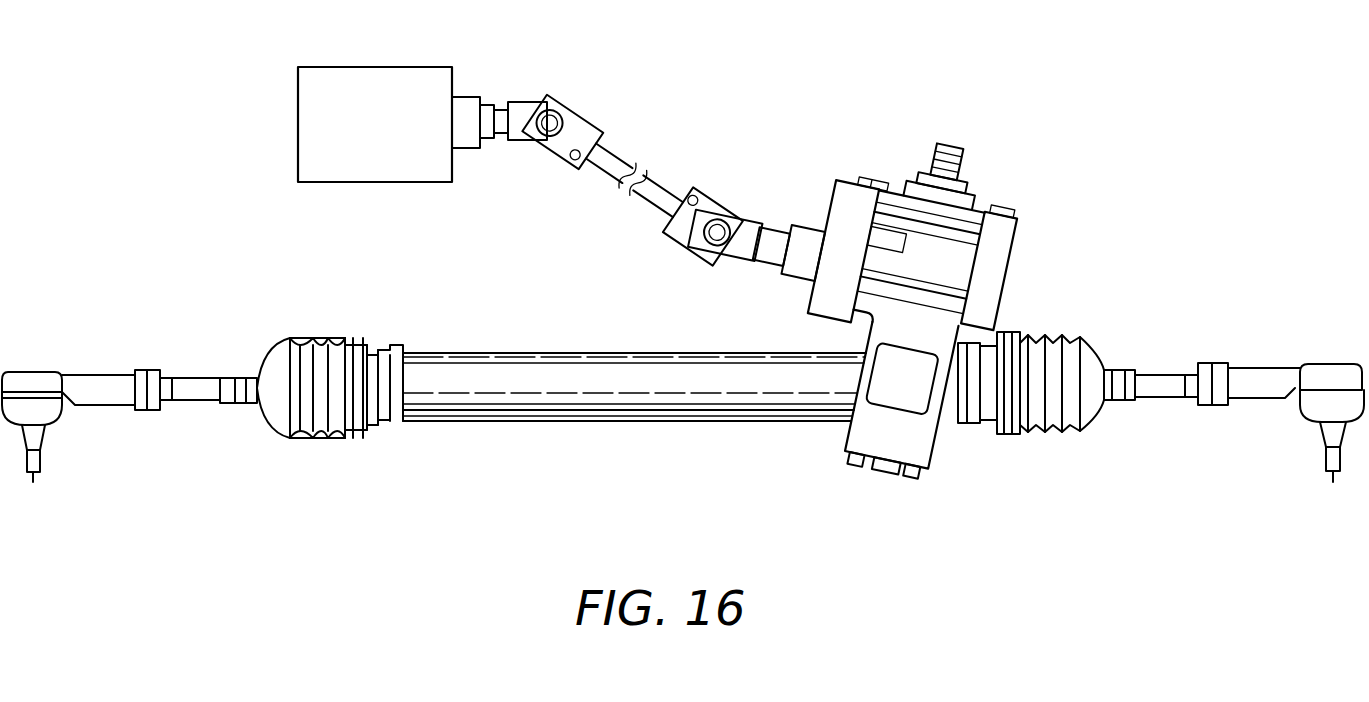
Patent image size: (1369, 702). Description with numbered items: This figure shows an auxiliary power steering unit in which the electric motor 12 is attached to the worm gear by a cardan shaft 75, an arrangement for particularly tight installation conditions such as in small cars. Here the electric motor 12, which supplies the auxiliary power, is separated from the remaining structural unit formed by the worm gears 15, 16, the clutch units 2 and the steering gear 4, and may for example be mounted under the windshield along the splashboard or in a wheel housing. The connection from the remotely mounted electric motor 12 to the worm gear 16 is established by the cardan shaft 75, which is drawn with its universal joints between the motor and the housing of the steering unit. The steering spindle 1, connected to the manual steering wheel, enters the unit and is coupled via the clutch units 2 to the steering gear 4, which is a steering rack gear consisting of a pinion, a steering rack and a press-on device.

The steering spindle 1 is at (953, 143).
The clutch units 2 is at (888, 287).
The steering gear 4 is at (822, 440).
The electric motor 12 is at (325, 117).
The worm gear 15 is at (827, 293).
The worm gear 16 is at (848, 202).
The cardan shaft 75 is at (556, 95).